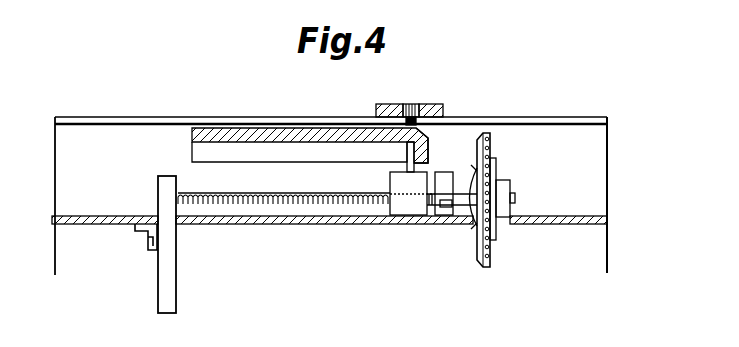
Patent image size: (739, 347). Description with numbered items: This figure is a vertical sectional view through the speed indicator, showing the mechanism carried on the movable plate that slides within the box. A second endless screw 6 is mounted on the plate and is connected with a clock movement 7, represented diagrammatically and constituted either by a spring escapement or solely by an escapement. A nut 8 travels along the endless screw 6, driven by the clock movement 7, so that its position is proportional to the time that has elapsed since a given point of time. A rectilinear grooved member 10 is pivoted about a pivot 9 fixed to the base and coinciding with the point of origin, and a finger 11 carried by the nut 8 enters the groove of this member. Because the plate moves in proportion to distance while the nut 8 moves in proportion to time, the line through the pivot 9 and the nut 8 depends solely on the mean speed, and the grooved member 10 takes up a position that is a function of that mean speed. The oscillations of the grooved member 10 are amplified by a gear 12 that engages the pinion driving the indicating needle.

The second endless screw 6 is at (251, 198).
The clock movement 7 is at (168, 194).
The nut 8 is at (410, 207).
The pivot 9 is at (428, 130).
The rectilinear grooved member 10 is at (243, 137).
The finger 11 is at (409, 152).
The gear 12 is at (440, 108).